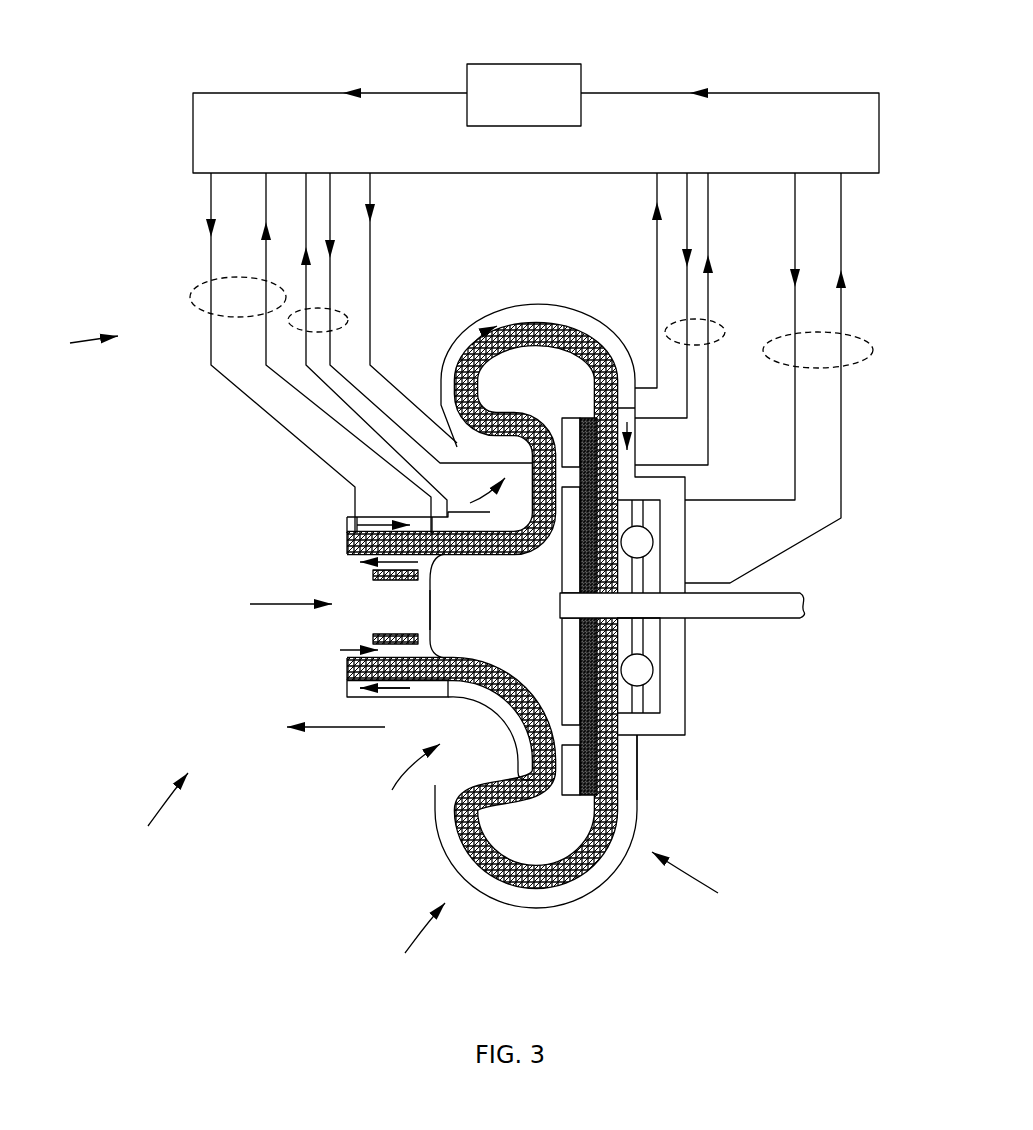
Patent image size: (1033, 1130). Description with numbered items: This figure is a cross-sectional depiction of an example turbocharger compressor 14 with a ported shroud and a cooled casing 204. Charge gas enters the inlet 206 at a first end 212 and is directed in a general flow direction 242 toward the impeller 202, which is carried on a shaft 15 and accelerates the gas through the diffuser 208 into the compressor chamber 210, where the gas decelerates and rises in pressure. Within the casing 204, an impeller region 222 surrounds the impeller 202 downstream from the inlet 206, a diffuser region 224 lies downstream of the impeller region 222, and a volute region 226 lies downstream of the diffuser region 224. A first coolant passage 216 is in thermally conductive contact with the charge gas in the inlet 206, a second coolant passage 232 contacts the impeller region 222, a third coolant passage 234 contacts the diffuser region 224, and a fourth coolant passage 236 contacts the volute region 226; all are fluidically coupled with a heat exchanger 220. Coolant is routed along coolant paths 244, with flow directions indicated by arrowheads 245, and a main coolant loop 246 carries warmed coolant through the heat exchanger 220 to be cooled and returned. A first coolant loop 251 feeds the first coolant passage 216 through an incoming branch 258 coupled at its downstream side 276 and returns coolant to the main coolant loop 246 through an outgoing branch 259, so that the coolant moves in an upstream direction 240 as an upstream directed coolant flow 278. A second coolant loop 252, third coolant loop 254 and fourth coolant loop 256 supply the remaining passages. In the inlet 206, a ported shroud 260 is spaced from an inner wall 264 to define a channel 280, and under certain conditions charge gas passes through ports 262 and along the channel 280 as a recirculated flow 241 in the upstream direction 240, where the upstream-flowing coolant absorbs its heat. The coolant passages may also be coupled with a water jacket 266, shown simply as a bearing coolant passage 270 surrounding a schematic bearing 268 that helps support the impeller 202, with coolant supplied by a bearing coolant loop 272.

The turbocharger compressor 14 is at (154, 812).
The shaft 15 is at (762, 615).
The impeller 202 is at (573, 777).
The casing 204 is at (507, 330).
The inlet 206 is at (373, 575).
The diffuser 208 is at (590, 785).
The compressor chamber 210 is at (538, 378).
The first end 212 is at (335, 692).
The first coolant passage 216 is at (347, 520).
The heat exchanger 220 is at (526, 70).
The impeller region 222 is at (405, 779).
The diffuser region 224 is at (689, 889).
The volute region 226 is at (409, 942).
The second coolant passage 232 is at (447, 455).
The third coolant passage 234 is at (630, 432).
The fourth coolant passage 236 is at (527, 306).
The upstream direction 240 is at (330, 730).
The recirculated flow 241 is at (358, 650).
The general flow direction 242 is at (250, 606).
The coolant paths 244 is at (78, 351).
The arrowheads 245 is at (207, 200).
The main coolant loop 246 is at (193, 117).
The first coolant loop 251 is at (190, 299).
The second coolant loop 252 is at (350, 311).
The third coolant loop 254 is at (371, 250).
The fourth coolant loop 256 is at (697, 320).
The incoming branch 258 is at (295, 390).
The outgoing branch 259 is at (222, 373).
The ported shroud 260 is at (352, 562).
The ports 262 is at (437, 633).
The inner wall 264 is at (347, 548).
The water jacket 266 is at (685, 680).
The bearing 268 is at (650, 700).
The bearing coolant passage 270 is at (672, 712).
The bearing coolant loop 272 is at (830, 343).
The downstream side 276 is at (430, 618).
The upstream directed coolant flow 278 is at (380, 525).
The channel 280 is at (385, 570).